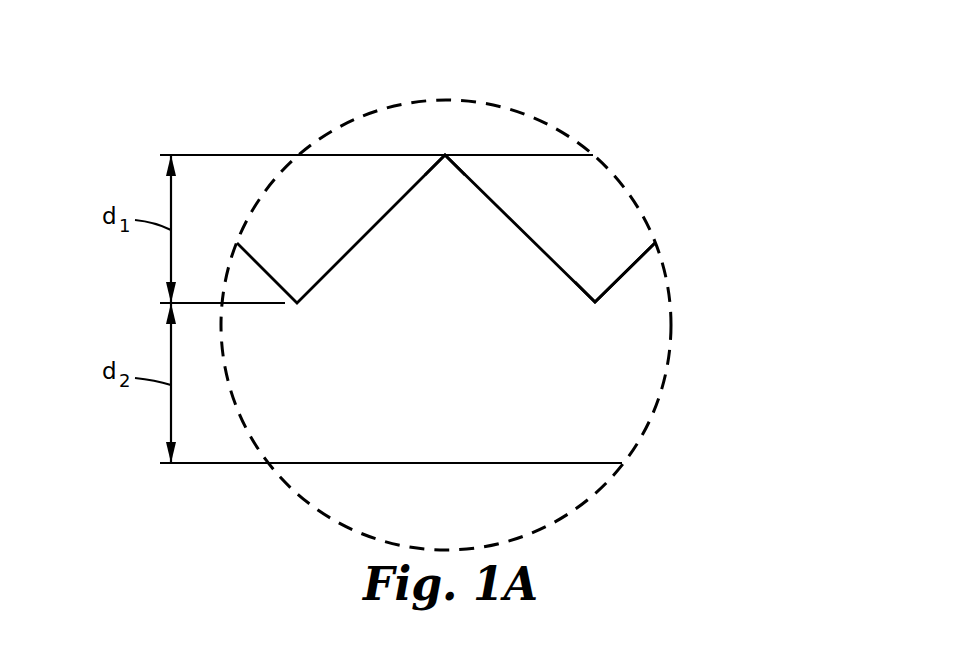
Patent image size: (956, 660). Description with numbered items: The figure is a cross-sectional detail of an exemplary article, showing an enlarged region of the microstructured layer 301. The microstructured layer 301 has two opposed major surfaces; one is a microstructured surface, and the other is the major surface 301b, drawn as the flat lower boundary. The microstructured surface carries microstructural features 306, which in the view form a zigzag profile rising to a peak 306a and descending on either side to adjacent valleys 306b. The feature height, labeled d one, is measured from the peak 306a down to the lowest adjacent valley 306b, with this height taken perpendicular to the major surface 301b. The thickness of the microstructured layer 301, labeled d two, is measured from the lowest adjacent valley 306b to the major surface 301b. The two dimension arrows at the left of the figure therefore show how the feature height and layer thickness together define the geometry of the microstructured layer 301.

The microstructured layer 301 is at (640, 393).
The second major surface 301b is at (595, 463).
The microstructural features 306 is at (482, 222).
The peak 306a is at (445, 155).
The valley 306b is at (595, 302).